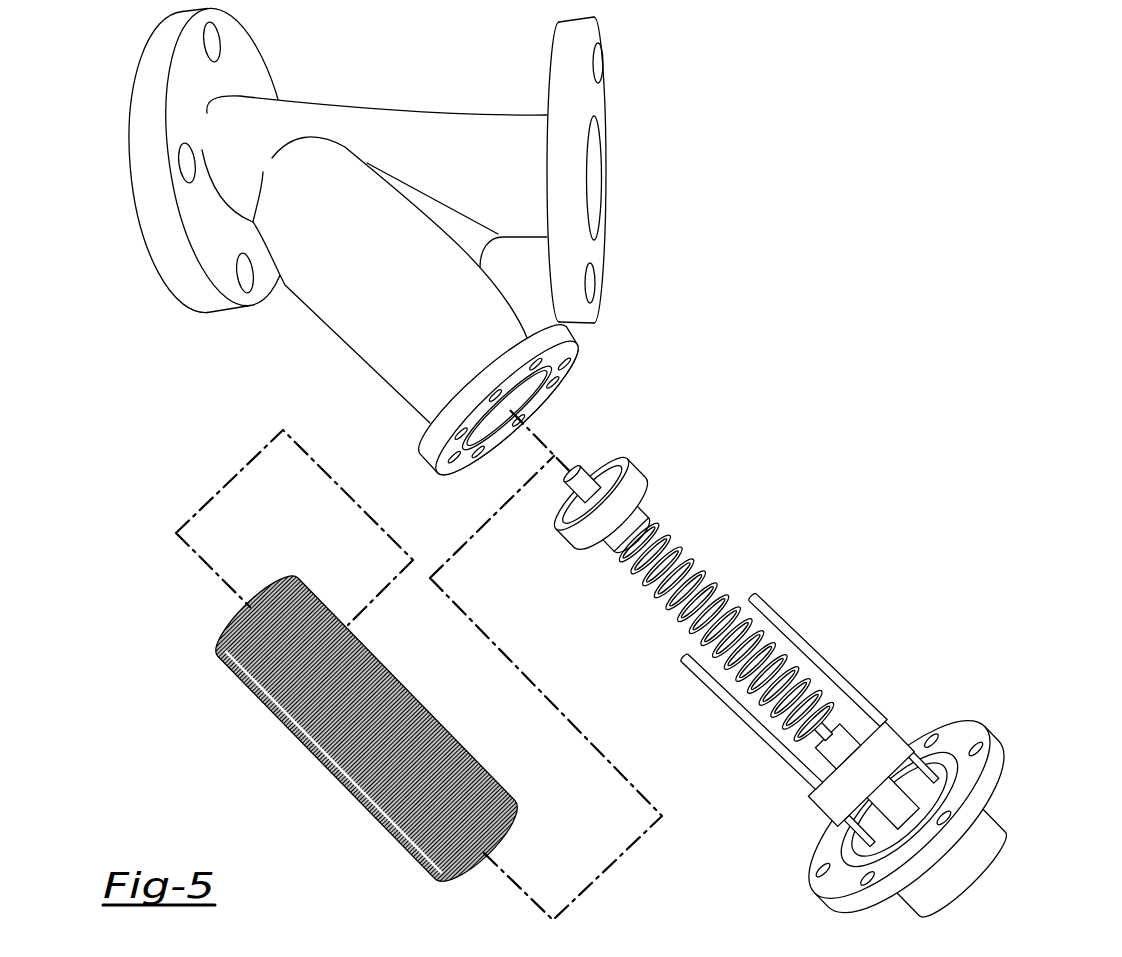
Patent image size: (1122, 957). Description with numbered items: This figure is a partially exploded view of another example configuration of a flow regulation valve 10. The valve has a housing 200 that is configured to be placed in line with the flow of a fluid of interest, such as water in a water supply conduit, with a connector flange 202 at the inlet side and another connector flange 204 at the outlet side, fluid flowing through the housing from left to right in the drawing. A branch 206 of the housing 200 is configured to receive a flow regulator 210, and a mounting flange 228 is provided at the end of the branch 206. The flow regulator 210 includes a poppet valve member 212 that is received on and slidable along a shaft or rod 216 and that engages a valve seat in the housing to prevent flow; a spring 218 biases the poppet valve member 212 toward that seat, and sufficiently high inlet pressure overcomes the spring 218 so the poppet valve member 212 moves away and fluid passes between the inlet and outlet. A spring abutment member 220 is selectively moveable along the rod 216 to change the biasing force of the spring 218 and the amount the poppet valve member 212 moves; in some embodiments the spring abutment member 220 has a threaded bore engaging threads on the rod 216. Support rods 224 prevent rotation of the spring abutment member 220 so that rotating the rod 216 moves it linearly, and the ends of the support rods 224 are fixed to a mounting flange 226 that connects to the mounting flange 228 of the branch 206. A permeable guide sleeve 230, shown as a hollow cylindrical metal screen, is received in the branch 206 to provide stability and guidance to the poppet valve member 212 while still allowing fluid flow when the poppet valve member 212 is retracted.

The flow regulation valve 10 is at (756, 349).
The housing 200 is at (417, 110).
The connector flange 202 is at (140, 212).
The connector flange 204 is at (607, 103).
The branch 206 is at (342, 346).
The mounting flange 228 is at (573, 340).
The flow regulator 210 is at (815, 588).
The poppet valve member 212 is at (627, 468).
The rod 216 is at (580, 472).
The spring 218 is at (687, 557).
The spring abutment member 220 is at (903, 733).
The support rods 224 is at (813, 660).
The mounting flange 226 is at (1003, 740).
The permeable guide sleeve 230 is at (277, 673).